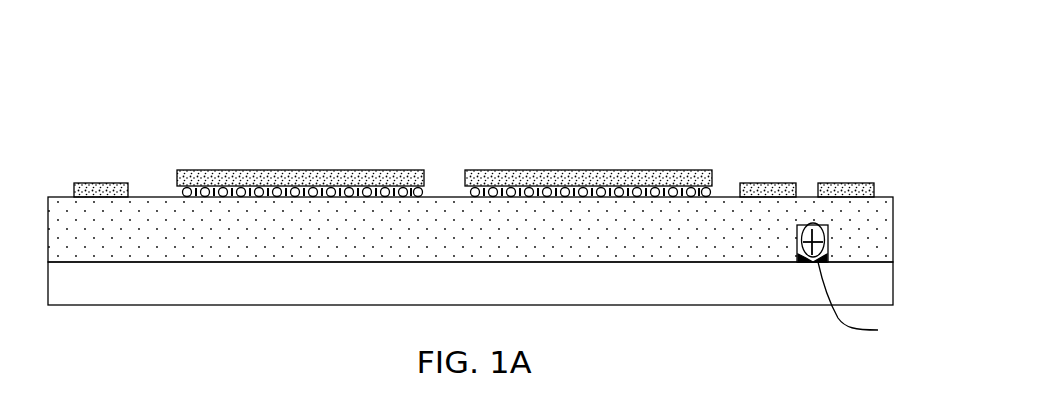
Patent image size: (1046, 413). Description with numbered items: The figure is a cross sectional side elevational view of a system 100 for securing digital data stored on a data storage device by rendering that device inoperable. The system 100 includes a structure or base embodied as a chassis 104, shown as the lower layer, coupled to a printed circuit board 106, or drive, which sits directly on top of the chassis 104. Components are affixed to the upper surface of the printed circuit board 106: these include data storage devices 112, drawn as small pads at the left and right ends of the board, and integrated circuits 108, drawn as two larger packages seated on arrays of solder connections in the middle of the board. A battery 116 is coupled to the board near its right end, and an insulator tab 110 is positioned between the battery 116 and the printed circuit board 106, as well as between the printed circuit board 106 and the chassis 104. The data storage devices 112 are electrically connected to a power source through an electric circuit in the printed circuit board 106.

The system 100 is at (185, 77).
The chassis 104 is at (110, 296).
The printed circuit board 106 is at (110, 245).
The integrated circuits 108 is at (299, 170).
The insulator tab 110 is at (870, 301).
The data storage device 112 is at (100, 183).
The battery 116 is at (826, 233).